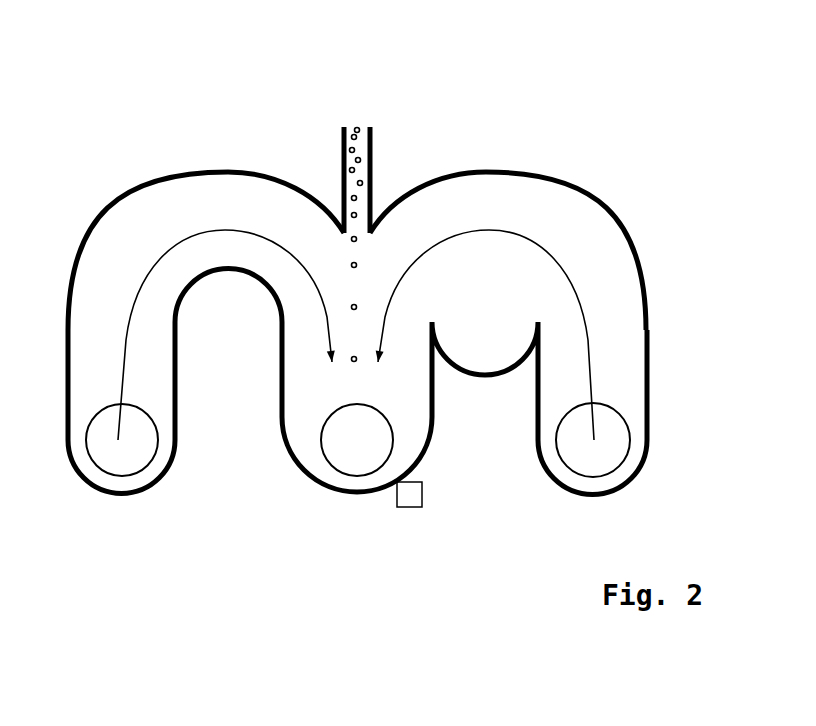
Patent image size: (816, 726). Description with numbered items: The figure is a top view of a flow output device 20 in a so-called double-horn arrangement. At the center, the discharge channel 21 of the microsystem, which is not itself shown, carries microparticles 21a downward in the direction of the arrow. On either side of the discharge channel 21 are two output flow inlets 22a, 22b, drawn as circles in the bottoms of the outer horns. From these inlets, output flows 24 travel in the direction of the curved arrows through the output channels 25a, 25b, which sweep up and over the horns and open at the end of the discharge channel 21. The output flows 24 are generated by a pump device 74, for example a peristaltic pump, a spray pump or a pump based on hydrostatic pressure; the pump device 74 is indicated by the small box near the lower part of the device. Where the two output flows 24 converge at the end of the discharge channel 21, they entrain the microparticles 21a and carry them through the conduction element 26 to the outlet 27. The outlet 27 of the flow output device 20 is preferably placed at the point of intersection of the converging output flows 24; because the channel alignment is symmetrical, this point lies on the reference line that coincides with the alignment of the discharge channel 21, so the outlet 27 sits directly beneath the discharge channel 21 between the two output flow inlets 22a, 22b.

The flow output device 20 is at (497, 369).
The discharge channel 21 is at (354, 37).
The microparticles 21a is at (357, 130).
The output flow inlet 22a is at (122, 440).
The output flow inlet 22b is at (593, 440).
The output flows 24 is at (320, 276).
The output channel 25a is at (171, 178).
The output channel 25b is at (620, 237).
The conduction element 26 is at (297, 413).
The outlet 27 is at (335, 453).
The pump device 74 is at (422, 493).